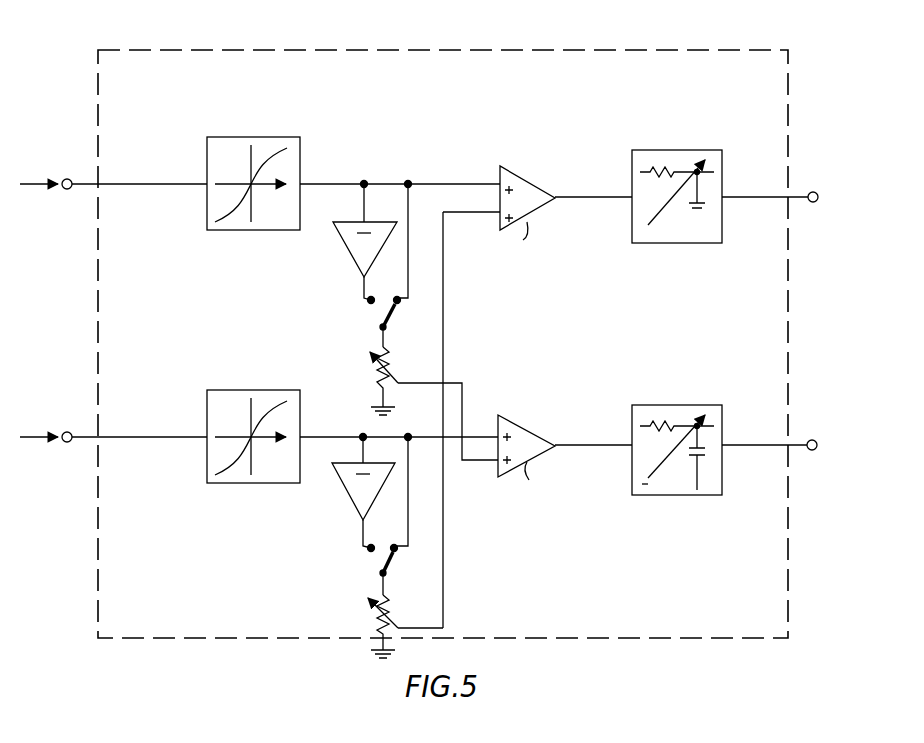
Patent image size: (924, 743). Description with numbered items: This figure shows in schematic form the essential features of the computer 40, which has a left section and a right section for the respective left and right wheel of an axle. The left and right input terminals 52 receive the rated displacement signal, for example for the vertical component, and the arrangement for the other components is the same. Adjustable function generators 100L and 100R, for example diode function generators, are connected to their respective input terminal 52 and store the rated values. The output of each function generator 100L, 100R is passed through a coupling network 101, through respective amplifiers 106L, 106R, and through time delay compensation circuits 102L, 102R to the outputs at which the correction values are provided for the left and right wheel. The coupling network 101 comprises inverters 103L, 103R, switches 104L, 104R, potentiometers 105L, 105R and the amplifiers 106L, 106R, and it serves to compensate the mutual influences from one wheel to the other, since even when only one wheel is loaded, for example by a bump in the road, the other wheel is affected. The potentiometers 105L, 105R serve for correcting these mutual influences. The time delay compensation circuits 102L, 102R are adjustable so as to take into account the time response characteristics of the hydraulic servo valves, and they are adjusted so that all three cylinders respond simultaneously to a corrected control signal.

The computer 40 is at (790, 85).
The input terminal 52 is at (68, 178).
The adjustable function generator 100L is at (229, 232).
The adjustable function generator 100R is at (220, 483).
The coupling network 101 is at (493, 380).
The time delay compensation circuit 102L is at (697, 244).
The time delay compensation circuit 102R is at (710, 497).
The inverter 103L is at (357, 262).
The inverter 103R is at (347, 496).
The switch 104L is at (383, 312).
The switch 104R is at (382, 562).
The potentiometer 105L is at (373, 377).
The potentiometer 105R is at (372, 620).
The amplifier 106L is at (548, 160).
The amplifier 106R is at (550, 417).